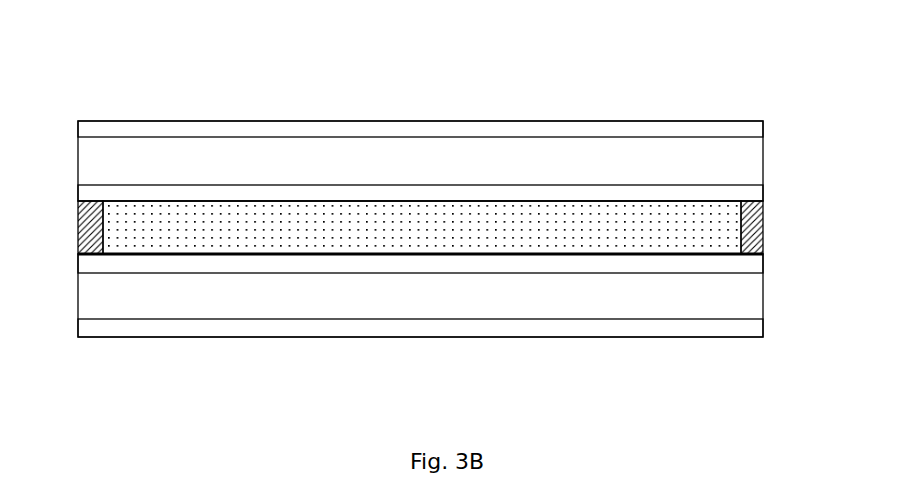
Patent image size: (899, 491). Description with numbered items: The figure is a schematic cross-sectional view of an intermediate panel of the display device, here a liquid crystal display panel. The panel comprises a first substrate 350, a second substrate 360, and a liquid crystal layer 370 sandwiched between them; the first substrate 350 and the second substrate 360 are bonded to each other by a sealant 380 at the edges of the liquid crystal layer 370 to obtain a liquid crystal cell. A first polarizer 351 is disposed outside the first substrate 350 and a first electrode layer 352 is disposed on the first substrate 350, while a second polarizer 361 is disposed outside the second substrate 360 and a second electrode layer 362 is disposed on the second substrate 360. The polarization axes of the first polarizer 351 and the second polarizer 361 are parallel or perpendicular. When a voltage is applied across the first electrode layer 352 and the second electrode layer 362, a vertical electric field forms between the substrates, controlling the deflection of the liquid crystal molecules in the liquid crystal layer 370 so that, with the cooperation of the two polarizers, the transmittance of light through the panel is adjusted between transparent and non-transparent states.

The first substrate 350 is at (675, 157).
The first polarizer 351 is at (543, 130).
The first electrode layer 352 is at (743, 197).
The liquid crystal layer 370 is at (158, 228).
The sealant 380 is at (88, 222).
The second substrate 360 is at (703, 296).
The second electrode layer 362 is at (753, 263).
The second polarizer 361 is at (548, 330).